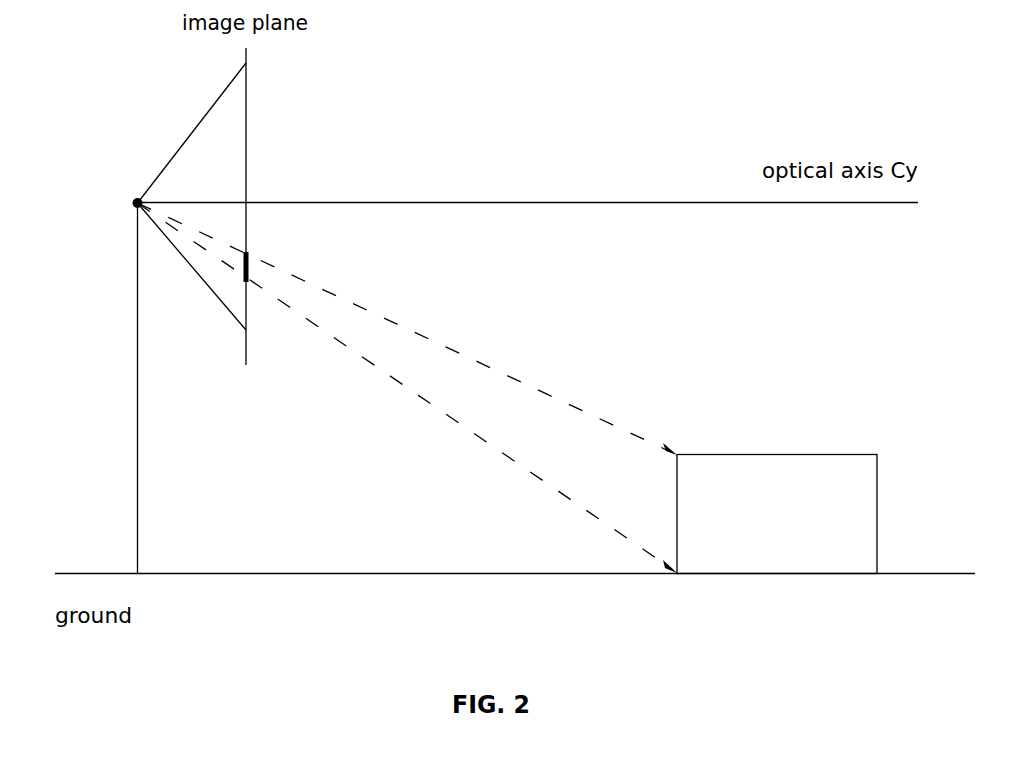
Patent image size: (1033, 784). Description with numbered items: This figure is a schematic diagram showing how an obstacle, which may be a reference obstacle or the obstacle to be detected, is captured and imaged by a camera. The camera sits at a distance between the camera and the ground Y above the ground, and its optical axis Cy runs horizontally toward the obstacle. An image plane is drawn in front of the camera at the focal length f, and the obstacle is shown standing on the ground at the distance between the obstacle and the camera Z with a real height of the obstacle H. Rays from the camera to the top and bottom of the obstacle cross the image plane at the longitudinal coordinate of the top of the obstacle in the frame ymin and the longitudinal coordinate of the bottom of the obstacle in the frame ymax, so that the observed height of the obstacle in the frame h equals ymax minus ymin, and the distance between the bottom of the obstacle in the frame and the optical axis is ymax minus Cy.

The element camera is at (103, 187).
The focal length f is at (202, 188).
The distance between the camera and the ground Y is at (123, 388).
The distance between the obstacle and the camera Z is at (379, 560).
The observed height of the obstacle in a frame h is at (248, 267).
The longitudinal coordinate of the top of the obstacle in the frame ymin is at (279, 227).
The longitudinal coordinate of the bottom of the obstacle in the frame ymax is at (246, 282).
The height of an obstacle H is at (767, 514).